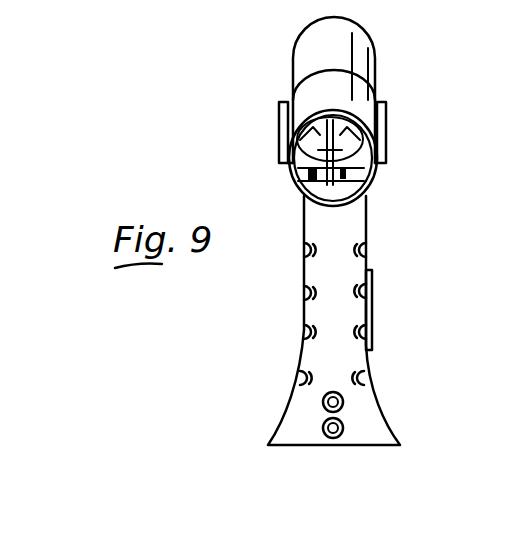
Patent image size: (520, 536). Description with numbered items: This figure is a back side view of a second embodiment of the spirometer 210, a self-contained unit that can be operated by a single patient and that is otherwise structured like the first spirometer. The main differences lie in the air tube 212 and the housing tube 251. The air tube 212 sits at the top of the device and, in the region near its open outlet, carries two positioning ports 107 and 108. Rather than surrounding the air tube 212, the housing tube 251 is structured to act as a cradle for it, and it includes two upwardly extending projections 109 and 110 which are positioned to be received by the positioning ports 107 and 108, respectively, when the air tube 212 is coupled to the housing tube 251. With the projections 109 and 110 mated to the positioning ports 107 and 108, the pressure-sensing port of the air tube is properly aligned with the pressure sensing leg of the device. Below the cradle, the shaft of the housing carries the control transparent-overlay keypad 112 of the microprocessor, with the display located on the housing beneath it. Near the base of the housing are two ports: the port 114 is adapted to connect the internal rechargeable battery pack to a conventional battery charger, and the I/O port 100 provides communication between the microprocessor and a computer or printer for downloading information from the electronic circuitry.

The I/O port 100 is at (322, 428).
The positioning port 107 is at (345, 178).
The positioning port 108 is at (300, 183).
The upwardly extending projection 109 is at (350, 180).
The upwardly extending projection 110 is at (287, 165).
The control transparent-overlay keypad 112 is at (373, 307).
The port 114 is at (322, 401).
The spirometer 210 is at (244, 332).
The air tube 212 is at (376, 60).
The housing tube 251 is at (279, 113).